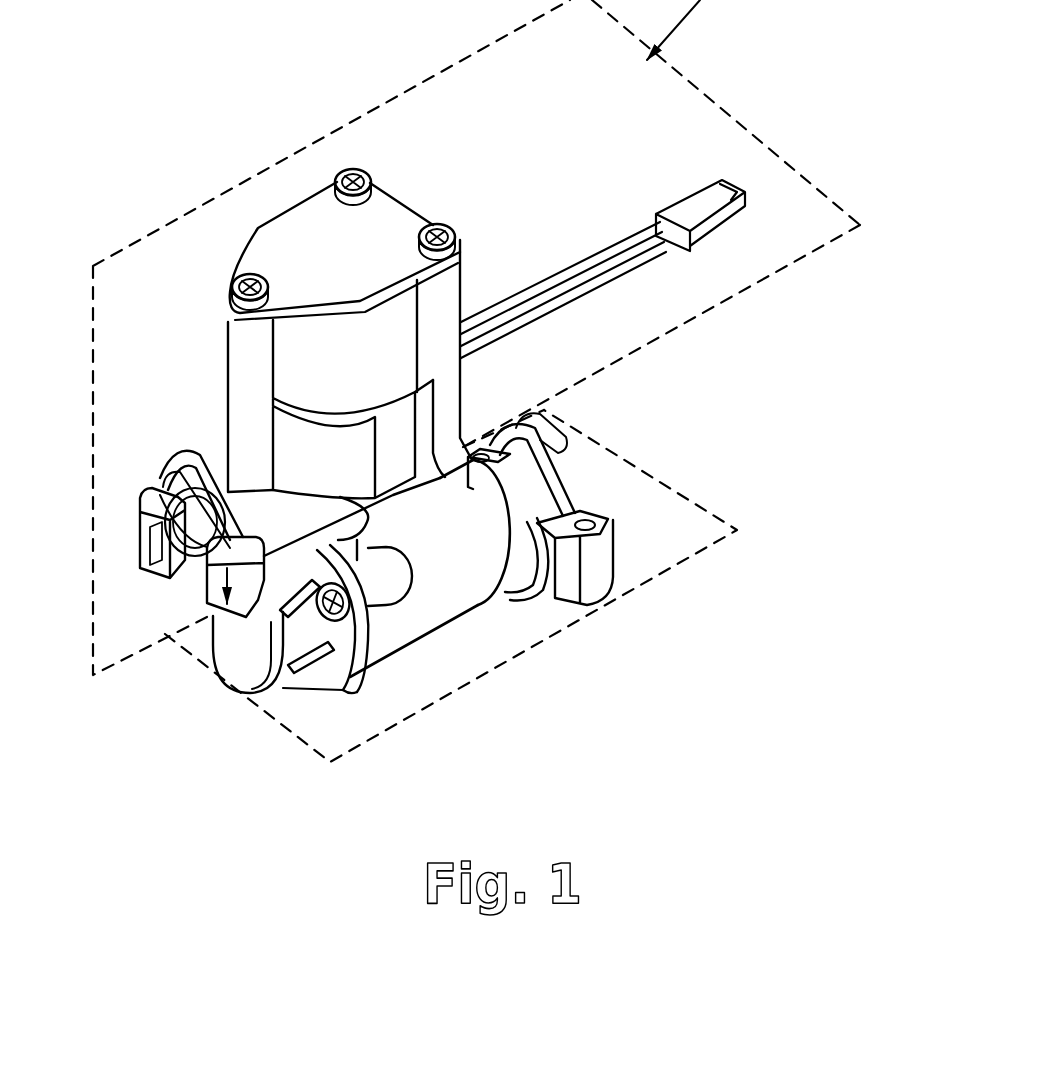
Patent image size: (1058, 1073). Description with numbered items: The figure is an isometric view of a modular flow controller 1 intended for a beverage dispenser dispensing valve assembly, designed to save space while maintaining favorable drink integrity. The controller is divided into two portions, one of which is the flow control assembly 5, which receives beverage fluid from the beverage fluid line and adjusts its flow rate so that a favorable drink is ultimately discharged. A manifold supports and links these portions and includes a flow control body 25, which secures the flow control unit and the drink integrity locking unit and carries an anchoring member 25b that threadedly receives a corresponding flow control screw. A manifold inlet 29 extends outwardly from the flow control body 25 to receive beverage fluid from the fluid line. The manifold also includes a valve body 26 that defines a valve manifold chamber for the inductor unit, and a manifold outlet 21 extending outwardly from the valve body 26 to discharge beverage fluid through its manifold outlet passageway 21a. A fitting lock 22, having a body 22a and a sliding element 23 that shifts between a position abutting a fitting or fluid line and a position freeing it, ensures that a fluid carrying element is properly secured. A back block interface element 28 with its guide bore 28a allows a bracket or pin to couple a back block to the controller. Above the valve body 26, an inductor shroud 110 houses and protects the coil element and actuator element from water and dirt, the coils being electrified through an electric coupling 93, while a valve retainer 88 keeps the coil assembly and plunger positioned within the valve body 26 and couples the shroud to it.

The modular flow controller 1 is at (178, 117).
The flow control assembly 5 is at (718, 545).
The manifold outlet 21 is at (312, 535).
The manifold outlet passageway 21a is at (198, 548).
The fitting lock 22 is at (145, 490).
The body 22a is at (245, 640).
The sliding element 23 is at (202, 465).
The flow control body 25 is at (467, 567).
The anchoring member 25b is at (387, 575).
The valve body 26 is at (354, 455).
The back block interface element 28 is at (600, 568).
The back block interface element guide bore 28a is at (587, 520).
The manifold inlet 29 is at (537, 518).
The valve retainer 88 is at (350, 266).
The electric coupling 93 is at (593, 258).
The inductor shroud 110 is at (388, 372).